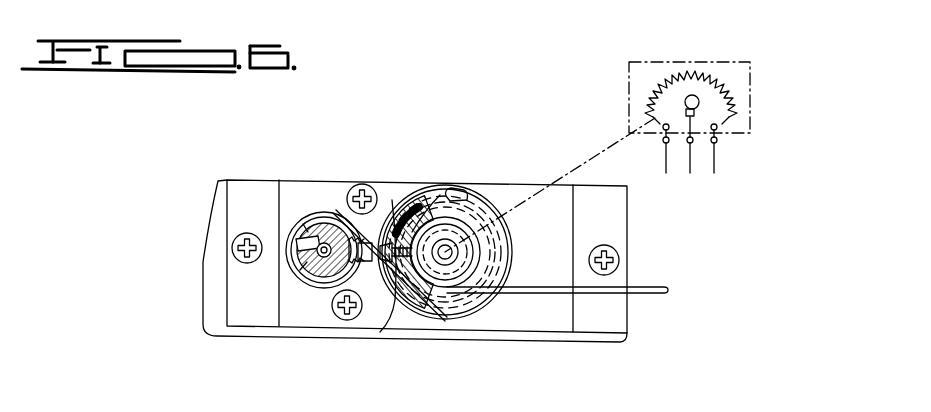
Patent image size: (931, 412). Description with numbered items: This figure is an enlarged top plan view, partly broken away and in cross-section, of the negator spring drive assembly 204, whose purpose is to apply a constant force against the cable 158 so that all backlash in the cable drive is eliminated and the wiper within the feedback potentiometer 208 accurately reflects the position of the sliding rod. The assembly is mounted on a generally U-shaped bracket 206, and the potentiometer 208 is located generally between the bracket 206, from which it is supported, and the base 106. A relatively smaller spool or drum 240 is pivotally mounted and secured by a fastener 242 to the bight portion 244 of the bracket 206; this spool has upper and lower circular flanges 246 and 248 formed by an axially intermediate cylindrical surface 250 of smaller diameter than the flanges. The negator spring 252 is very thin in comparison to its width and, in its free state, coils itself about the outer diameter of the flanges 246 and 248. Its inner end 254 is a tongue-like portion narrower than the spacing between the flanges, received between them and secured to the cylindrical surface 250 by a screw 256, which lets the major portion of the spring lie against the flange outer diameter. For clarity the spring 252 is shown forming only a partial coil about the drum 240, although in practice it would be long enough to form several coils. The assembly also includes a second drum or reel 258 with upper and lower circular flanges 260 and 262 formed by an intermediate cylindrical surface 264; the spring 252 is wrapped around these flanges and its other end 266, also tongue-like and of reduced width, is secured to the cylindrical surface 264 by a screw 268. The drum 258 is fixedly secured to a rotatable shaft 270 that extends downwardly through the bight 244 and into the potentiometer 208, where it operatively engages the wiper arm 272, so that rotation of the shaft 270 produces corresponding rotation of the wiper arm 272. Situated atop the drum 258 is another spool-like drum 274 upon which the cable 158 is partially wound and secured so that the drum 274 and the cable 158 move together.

The base 106 is at (585, 345).
The cable 158 is at (648, 297).
The negator spring drive assembly 204 is at (455, 112).
The U-shaped bracket 206 is at (605, 335).
The feedback potentiometer 208 is at (750, 102).
The spool or drum 240 is at (300, 290).
The fastener 242 is at (297, 265).
The bight portion 244 is at (508, 335).
The upper circular flange 246 is at (333, 213).
The lower circular flange 248 is at (313, 268).
The cylindrical surface 250 is at (292, 243).
The negator spring 252 is at (383, 235).
The inner end 254 is at (366, 235).
The screw 256 is at (372, 270).
The second drum or reel 258 is at (500, 212).
The upper circular flange 260 is at (468, 191).
The lower circular flange 262 is at (412, 190).
The cylindrical surface 264 is at (455, 187).
The other end 266 is at (388, 270).
The screw 268 is at (380, 240).
The rotatable shaft 270 is at (483, 233).
The wiper arm 272 is at (692, 100).
The spool-like drum 274 is at (462, 262).